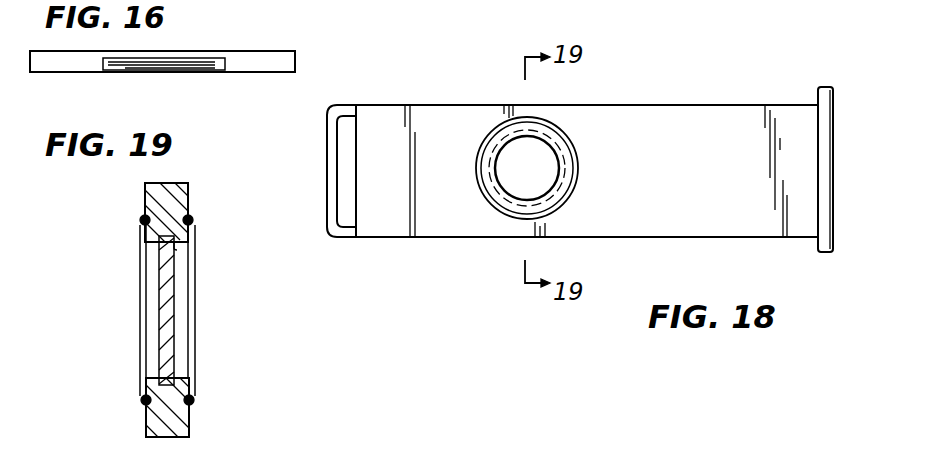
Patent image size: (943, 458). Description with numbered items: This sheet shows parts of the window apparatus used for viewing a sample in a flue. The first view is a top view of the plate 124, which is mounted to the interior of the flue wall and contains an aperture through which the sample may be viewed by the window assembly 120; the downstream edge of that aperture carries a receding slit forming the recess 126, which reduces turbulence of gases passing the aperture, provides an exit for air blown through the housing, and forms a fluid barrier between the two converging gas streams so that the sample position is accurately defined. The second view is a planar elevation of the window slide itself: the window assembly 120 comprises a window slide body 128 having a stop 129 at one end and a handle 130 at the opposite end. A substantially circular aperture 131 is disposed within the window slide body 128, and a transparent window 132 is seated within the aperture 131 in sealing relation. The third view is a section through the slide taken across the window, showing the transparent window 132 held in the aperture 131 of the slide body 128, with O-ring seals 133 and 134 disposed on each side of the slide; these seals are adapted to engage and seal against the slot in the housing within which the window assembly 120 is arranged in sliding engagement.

In FIG. 18, the window assembly 120 is at (478, 248).
In FIG. 19, the window assembly 120 is at (130, 297).
In FIG. 16, the plate 124 is at (296, 62).
In FIG. 16, the recess 126 is at (203, 72).
In FIG. 18, the window slide body 128 is at (745, 104).
In FIG. 19, the window slide body 128 is at (190, 192).
In FIG. 18, the stop 129 is at (834, 170).
In FIG. 18, the handle 130 is at (326, 150).
In FIG. 18, the circular aperture 131 is at (540, 178).
In FIG. 19, the circular aperture 131 is at (177, 250).
In FIG. 18, the transparent window 132 is at (540, 155).
In FIG. 19, the transparent window 132 is at (172, 318).
In FIG. 18, the O-ring seal 133 is at (579, 168).
In FIG. 19, the O-ring seal 133 is at (139, 220).
In FIG. 19, the O-ring seal 134 is at (194, 220).